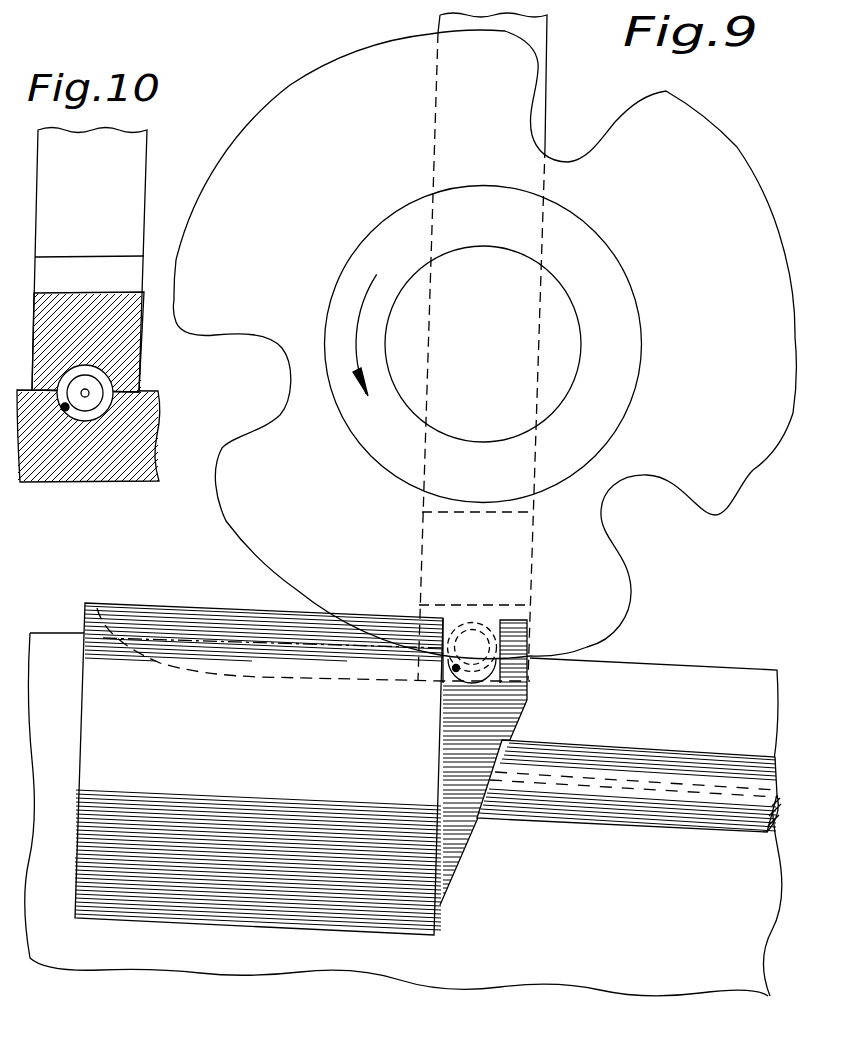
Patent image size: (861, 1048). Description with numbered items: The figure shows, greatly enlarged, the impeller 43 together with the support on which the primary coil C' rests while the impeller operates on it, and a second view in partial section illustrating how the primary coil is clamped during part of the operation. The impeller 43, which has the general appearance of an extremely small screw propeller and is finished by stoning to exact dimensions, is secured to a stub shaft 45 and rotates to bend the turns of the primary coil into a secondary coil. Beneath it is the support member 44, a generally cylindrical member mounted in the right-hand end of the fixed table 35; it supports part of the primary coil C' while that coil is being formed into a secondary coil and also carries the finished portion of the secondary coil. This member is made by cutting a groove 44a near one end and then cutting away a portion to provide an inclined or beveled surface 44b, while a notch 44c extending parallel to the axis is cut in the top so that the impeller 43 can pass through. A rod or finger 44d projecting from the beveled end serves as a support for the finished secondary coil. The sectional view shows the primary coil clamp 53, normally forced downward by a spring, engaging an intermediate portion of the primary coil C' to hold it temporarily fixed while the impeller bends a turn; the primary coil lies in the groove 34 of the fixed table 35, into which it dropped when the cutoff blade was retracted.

In FIG. 9, the impeller 43 is at (735, 148).
In FIG. 9, the stub shaft 45 is at (592, 328).
In FIG. 9, the primary coil clamp 53 is at (549, 90).
In FIG. 10, the primary coil clamp 53 is at (155, 345).
In FIG. 9, the support member 44 is at (306, 787).
In FIG. 9, the groove 44a is at (441, 684).
In FIG. 9, the beveled surface 44b is at (456, 865).
In FIG. 9, the notch 44c is at (299, 678).
In FIG. 9, the rod or finger 44d is at (650, 737).
In FIG. 9, the primary coil C is at (469, 674).
In FIG. 10, the primary coil C is at (85, 393).
In FIG. 10, the groove 34 is at (107, 396).
In FIG. 10, the fixed table 35 is at (158, 437).